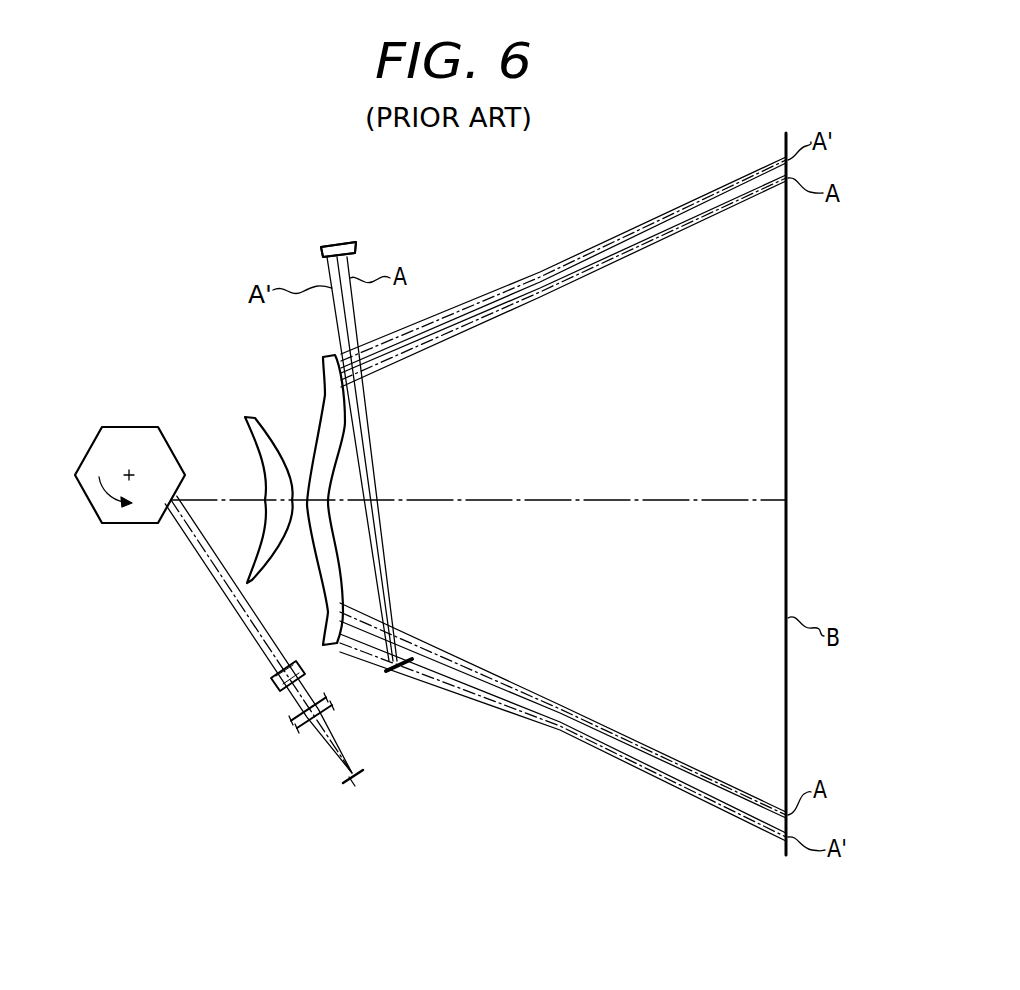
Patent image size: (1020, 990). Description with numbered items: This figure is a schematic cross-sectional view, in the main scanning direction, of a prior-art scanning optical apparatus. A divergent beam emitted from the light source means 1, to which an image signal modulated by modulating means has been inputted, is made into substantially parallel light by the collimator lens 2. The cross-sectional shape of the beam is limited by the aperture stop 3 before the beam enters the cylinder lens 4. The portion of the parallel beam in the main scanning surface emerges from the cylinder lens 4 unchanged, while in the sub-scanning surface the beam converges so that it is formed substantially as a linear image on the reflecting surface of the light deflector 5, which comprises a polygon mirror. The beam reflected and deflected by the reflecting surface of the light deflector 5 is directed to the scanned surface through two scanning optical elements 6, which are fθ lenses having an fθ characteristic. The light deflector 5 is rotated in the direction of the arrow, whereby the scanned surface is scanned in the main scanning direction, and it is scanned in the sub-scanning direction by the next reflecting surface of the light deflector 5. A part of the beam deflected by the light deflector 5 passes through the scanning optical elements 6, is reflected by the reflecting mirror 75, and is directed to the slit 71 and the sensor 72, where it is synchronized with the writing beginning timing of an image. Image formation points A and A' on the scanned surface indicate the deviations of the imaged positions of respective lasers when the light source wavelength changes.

The light source means 1 is at (353, 784).
The collimator lens 2 is at (303, 712).
The aperture stop 3 is at (295, 730).
The cylinder lens 4 is at (272, 682).
The light deflector 5 is at (138, 515).
The scanning optical elements 6 is at (325, 333).
The slit 71 is at (354, 254).
The sensor 72 is at (341, 244).
The reflecting mirror 75 is at (397, 672).